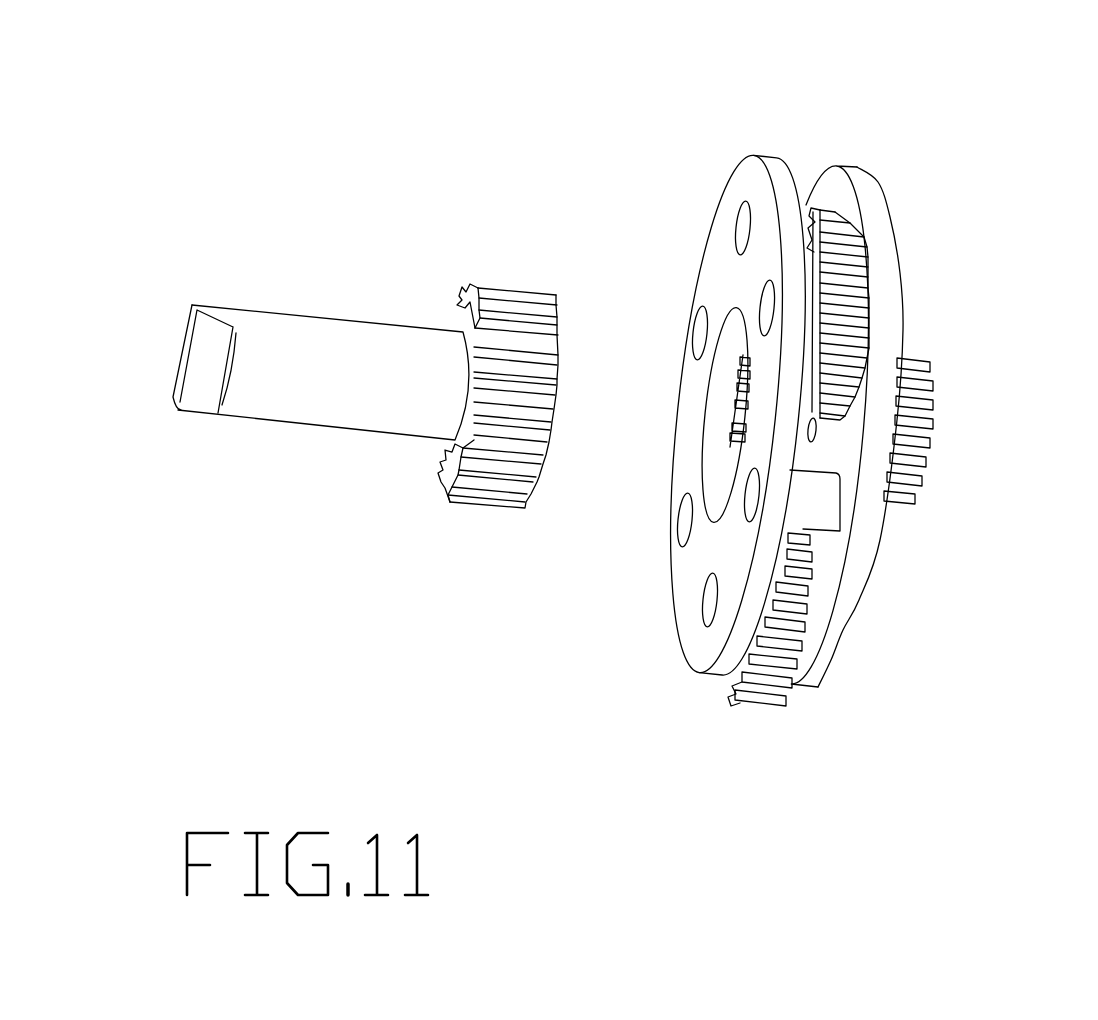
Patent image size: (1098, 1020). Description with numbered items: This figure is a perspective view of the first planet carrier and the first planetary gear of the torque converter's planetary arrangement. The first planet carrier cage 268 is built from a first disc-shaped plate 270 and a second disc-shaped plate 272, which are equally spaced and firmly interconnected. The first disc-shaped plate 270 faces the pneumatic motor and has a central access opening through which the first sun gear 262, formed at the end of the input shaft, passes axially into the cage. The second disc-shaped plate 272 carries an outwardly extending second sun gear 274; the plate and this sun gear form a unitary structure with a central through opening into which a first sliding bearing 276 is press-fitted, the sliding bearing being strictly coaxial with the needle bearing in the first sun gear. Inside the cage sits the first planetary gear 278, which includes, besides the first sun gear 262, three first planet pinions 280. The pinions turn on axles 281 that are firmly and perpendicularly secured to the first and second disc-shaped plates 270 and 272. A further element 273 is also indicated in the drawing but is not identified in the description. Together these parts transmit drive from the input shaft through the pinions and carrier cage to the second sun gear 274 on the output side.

The first sun gear 262 is at (508, 300).
The first planet carrier cage 268 is at (782, 392).
The first disc-shaped plate 270 is at (671, 371).
The second disc-shaped plate 272 is at (830, 642).
The sun gear 273 is at (720, 403).
The second sun gear 274 is at (908, 465).
The first sliding bearing 276 is at (817, 433).
The first planetary gear 278 is at (493, 493).
The first planet pinions 280 is at (852, 305).
The axles 281 is at (764, 308).